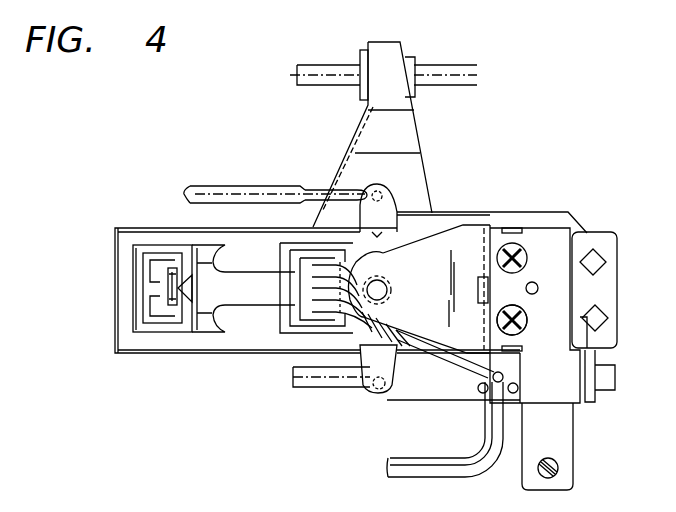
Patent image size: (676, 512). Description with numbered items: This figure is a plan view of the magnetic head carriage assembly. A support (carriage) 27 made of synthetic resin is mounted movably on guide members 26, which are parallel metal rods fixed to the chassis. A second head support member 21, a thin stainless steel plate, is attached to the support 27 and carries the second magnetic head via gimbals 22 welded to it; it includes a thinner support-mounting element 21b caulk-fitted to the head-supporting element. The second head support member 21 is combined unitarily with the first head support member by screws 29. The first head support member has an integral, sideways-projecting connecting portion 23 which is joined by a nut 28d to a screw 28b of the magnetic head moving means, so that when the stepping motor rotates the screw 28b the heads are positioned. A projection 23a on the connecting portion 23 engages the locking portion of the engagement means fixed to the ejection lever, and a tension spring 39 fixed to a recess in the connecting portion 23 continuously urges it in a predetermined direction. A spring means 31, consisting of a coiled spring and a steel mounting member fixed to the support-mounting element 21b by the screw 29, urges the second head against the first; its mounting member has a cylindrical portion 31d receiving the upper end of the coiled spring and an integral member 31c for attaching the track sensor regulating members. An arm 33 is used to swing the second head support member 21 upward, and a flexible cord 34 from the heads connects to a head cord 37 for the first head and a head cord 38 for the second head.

The second head support member 21 is at (140, 237).
The support-mounting element 21b is at (597, 232).
The gimbals 22 is at (136, 292).
The connecting portion 23 is at (395, 43).
The projection 23a is at (362, 185).
The guide members 26 is at (310, 386).
The support (carriage) 27 is at (428, 393).
The screw 28b is at (292, 72).
The nut 28d is at (361, 52).
The screws 29 is at (530, 318).
The spring means 31 is at (477, 233).
The member 31c is at (570, 462).
The cylindrical portion 31d is at (387, 290).
The arm 33 is at (392, 198).
The flexible cord 34 is at (250, 300).
The head cord 37 is at (413, 478).
The head cord 38 is at (400, 456).
The tension spring 39 is at (240, 185).